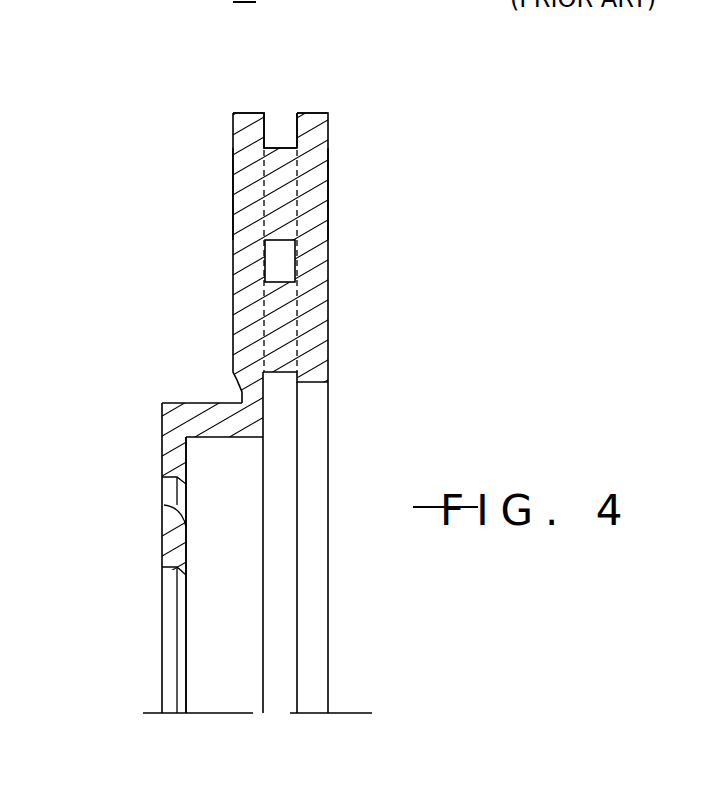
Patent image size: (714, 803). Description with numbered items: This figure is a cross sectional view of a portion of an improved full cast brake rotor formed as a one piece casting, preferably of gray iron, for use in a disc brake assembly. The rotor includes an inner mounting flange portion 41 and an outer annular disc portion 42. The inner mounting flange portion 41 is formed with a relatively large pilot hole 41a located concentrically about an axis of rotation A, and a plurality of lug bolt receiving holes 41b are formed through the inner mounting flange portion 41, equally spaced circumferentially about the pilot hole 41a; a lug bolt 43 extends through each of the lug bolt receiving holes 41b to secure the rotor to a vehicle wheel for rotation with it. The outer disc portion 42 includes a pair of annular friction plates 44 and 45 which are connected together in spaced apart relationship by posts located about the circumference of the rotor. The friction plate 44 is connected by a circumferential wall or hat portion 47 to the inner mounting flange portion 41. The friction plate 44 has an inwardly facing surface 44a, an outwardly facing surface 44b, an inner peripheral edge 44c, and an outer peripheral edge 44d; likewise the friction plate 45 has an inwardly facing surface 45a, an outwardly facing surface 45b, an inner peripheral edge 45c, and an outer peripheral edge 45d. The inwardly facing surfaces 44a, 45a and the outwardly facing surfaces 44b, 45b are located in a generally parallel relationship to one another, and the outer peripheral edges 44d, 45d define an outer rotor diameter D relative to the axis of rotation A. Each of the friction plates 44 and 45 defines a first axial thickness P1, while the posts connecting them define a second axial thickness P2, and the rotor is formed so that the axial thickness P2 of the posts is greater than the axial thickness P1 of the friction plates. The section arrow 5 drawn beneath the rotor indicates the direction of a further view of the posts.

The inner mounting flange portion 41 is at (155, 445).
The pilot hole 41a is at (165, 593).
The lug bolt receiving holes 41b is at (162, 505).
The outer annular disc portion 42 is at (228, 318).
The lug bolt 43 is at (129, 8).
The friction plate 44 is at (245, 245).
The inwardly facing surface 44a is at (266, 134).
The outwardly facing surface 44b is at (233, 162).
The inner peripheral edge 44c is at (227, 443).
The outer peripheral edge 44d is at (248, 111).
The friction plate 45 is at (318, 260).
The inwardly facing surface 45a is at (296, 134).
The outwardly facing surface 45b is at (328, 165).
The inner peripheral edge 45c is at (316, 385).
The outer peripheral edge 45d is at (307, 110).
The hat portion 47 is at (200, 402).
The axis of rotation A is at (153, 712).
The outer rotor diameter D is at (337, 112).
The first axial thickness P1 is at (264, 106).
The second axial thickness P2 is at (285, 58).
The section arrow 5 is at (282, 700).